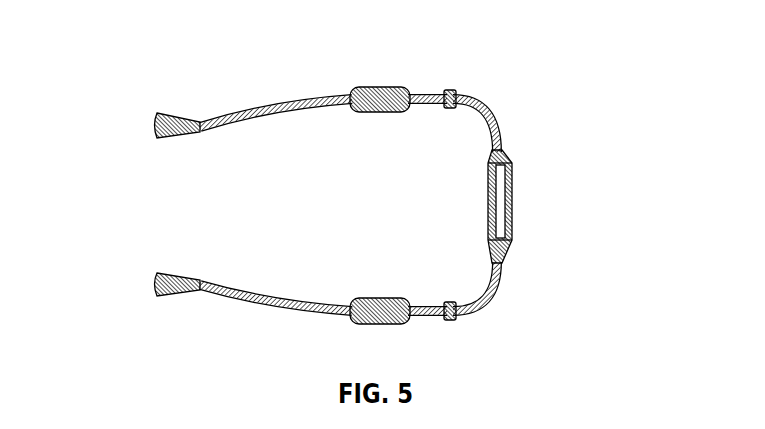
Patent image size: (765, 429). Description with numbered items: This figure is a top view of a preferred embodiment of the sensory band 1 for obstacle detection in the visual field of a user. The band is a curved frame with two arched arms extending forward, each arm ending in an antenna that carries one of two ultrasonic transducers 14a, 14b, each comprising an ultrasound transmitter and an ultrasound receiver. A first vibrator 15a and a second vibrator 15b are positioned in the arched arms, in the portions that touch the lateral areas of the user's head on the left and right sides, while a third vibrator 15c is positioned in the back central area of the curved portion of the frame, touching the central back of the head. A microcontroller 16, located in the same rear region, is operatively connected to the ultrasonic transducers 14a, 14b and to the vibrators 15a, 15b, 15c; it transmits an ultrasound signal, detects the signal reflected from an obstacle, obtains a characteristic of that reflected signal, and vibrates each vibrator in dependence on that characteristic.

The sensory band 1 is at (351, 230).
The ultrasonic transducer 14a is at (157, 127).
The ultrasonic transducer 14b is at (157, 285).
The first vibrator 15a is at (372, 111).
The second vibrator 15b is at (375, 299).
The third vibrator 15c is at (492, 198).
The microcontroller 16 is at (503, 208).